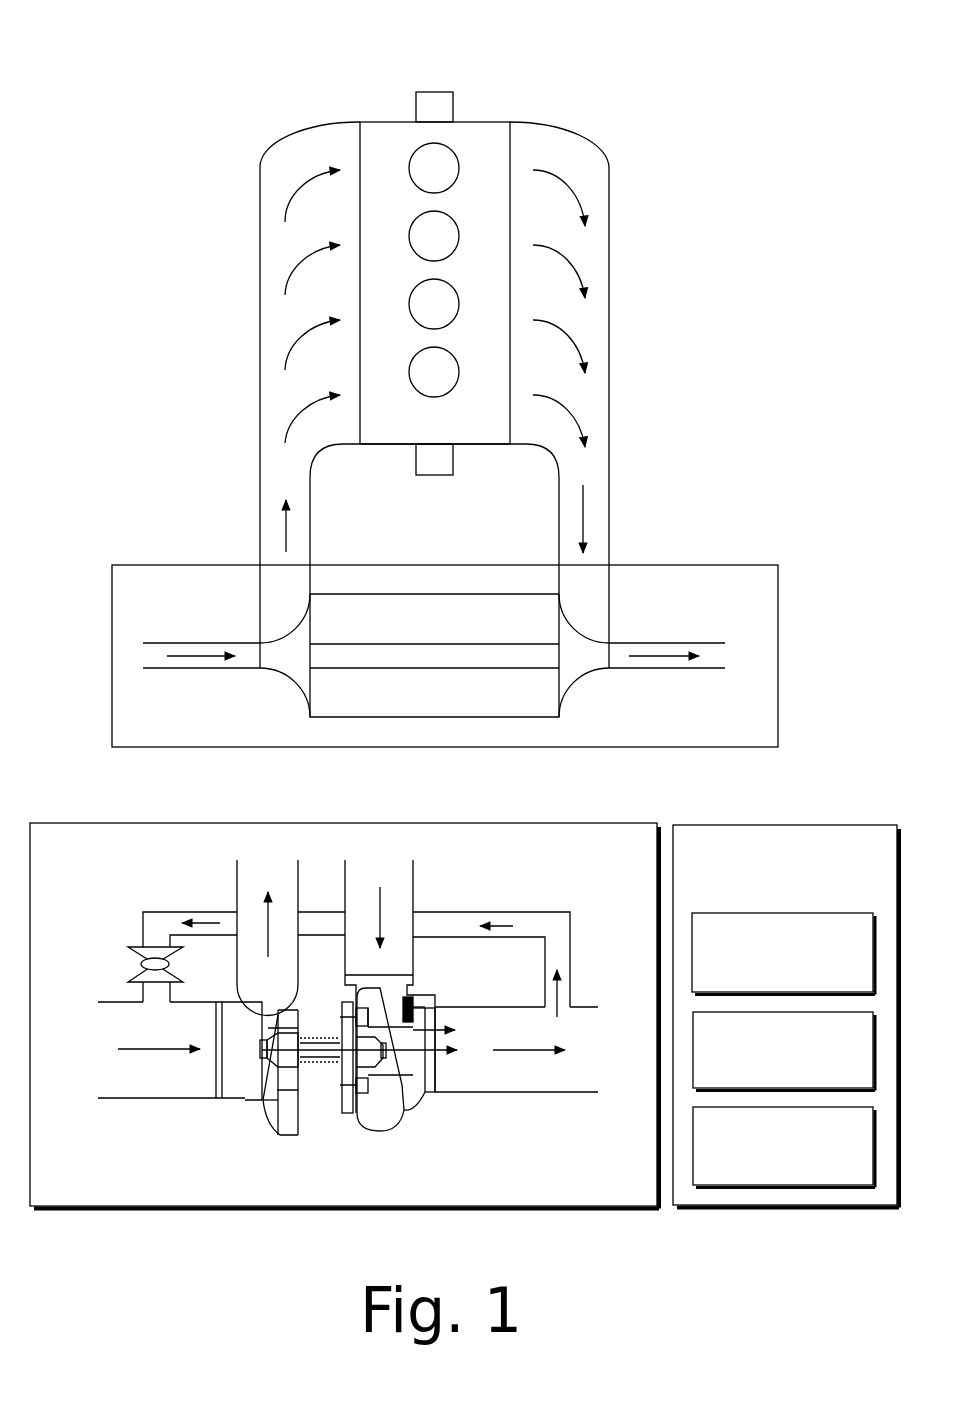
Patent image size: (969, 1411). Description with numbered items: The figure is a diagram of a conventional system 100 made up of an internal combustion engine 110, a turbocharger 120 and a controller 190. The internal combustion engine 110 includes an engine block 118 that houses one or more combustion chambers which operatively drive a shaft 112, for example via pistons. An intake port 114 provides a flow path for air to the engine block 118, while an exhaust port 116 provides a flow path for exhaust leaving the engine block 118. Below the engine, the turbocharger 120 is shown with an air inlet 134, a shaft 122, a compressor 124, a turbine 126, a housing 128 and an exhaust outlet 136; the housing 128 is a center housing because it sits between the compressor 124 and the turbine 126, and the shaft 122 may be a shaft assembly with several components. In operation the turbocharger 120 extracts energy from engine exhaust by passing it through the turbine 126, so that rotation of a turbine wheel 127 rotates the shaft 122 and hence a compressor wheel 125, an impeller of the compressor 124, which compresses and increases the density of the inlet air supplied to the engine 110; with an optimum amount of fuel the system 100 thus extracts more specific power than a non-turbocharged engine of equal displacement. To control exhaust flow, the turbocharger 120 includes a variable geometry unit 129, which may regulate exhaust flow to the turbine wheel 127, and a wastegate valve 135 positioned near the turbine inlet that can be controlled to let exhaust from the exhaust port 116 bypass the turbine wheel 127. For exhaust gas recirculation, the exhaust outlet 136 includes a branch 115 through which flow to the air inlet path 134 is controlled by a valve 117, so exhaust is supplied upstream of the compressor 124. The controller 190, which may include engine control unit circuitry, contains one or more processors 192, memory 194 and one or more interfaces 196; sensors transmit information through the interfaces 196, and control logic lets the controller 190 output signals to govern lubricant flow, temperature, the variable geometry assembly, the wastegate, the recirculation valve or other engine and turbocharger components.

The system 100 is at (606, 44).
The internal combustion engine 110 is at (397, 122).
The shaft 112 is at (436, 92).
The intake port 114 is at (282, 142).
The exhaust port 116 is at (603, 155).
The engine block 118 is at (421, 436).
The turbocharger 120 is at (665, 565).
The shaft 122 is at (433, 668).
The compressor 124 is at (290, 682).
The compressor wheel 125 is at (287, 1077).
The turbine 126 is at (580, 677).
The turbine wheel 127 is at (373, 1066).
The housing 128 is at (426, 630).
The variable geometry unit 129 is at (347, 1114).
The air inlet 134 is at (223, 642).
The wastegate valve 135 is at (414, 999).
The exhaust outlet 136 is at (673, 640).
The branch 115 is at (155, 911).
The valve 117 is at (137, 947).
The controller 190 is at (764, 899).
The processors 192 is at (783, 954).
The memory 194 is at (764, 1074).
The interfaces 196 is at (764, 1171).